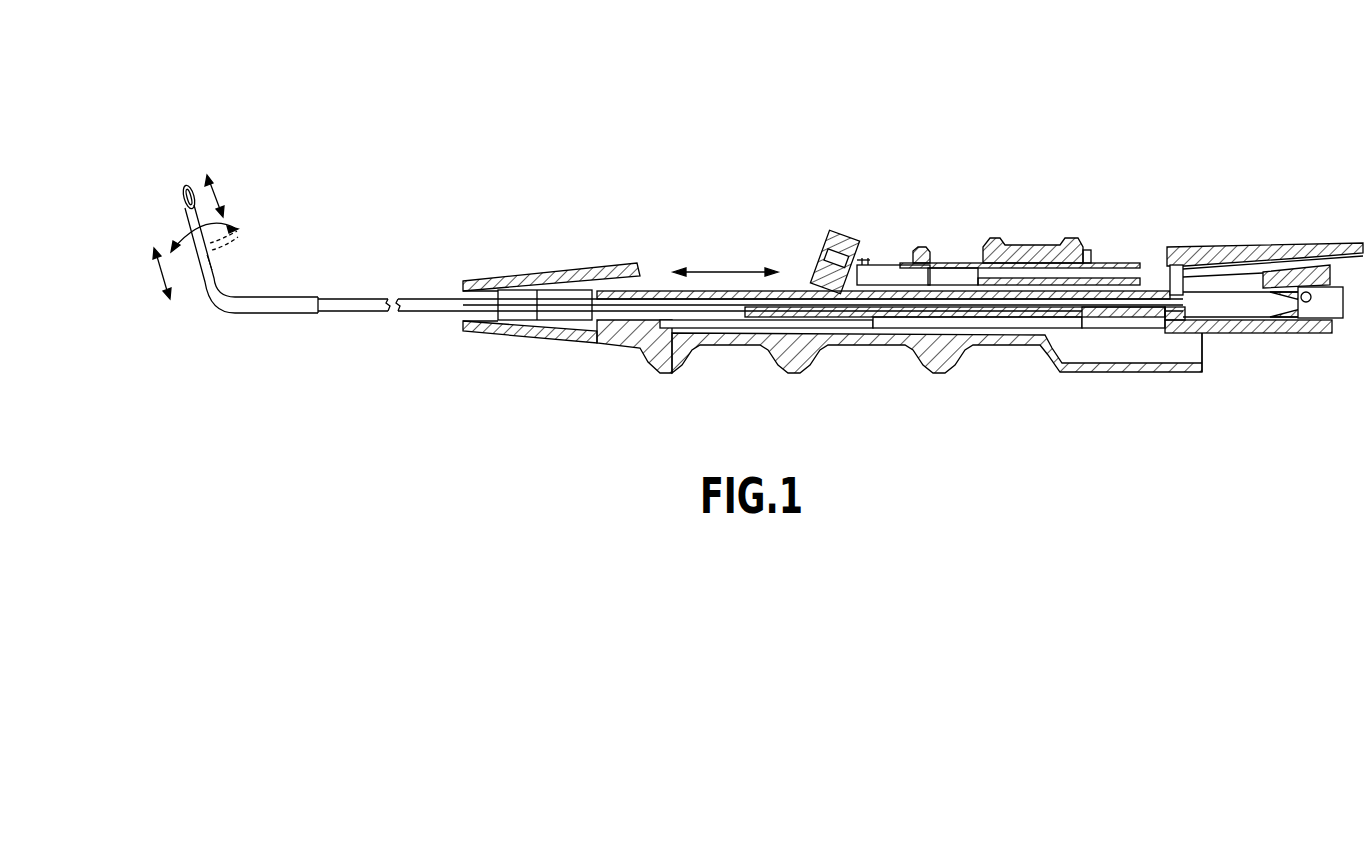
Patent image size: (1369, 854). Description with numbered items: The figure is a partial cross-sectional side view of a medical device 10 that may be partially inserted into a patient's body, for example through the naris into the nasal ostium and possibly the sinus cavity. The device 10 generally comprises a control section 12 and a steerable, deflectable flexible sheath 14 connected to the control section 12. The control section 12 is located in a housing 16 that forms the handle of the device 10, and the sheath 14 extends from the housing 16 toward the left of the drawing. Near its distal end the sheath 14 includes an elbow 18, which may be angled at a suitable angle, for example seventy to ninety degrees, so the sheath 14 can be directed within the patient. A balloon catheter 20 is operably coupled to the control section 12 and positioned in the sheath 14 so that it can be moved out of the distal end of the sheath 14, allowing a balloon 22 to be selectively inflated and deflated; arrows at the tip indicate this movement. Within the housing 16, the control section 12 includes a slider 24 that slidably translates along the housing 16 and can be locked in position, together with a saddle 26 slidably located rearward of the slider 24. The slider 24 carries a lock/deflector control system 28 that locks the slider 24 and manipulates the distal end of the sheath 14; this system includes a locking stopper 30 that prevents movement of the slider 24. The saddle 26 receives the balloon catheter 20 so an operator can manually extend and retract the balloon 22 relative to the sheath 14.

The medical device 10 is at (925, 98).
The control section 12 is at (797, 212).
The flexible sheath 14 is at (363, 298).
The housing 16 is at (578, 349).
The elbow 18 is at (243, 313).
The balloon catheter 20 is at (170, 202).
The balloon 22 is at (190, 186).
The slider 24 is at (927, 253).
The saddle 26 is at (1047, 247).
The lock/deflector control system 28 is at (795, 236).
The locking stopper 30 is at (805, 256).